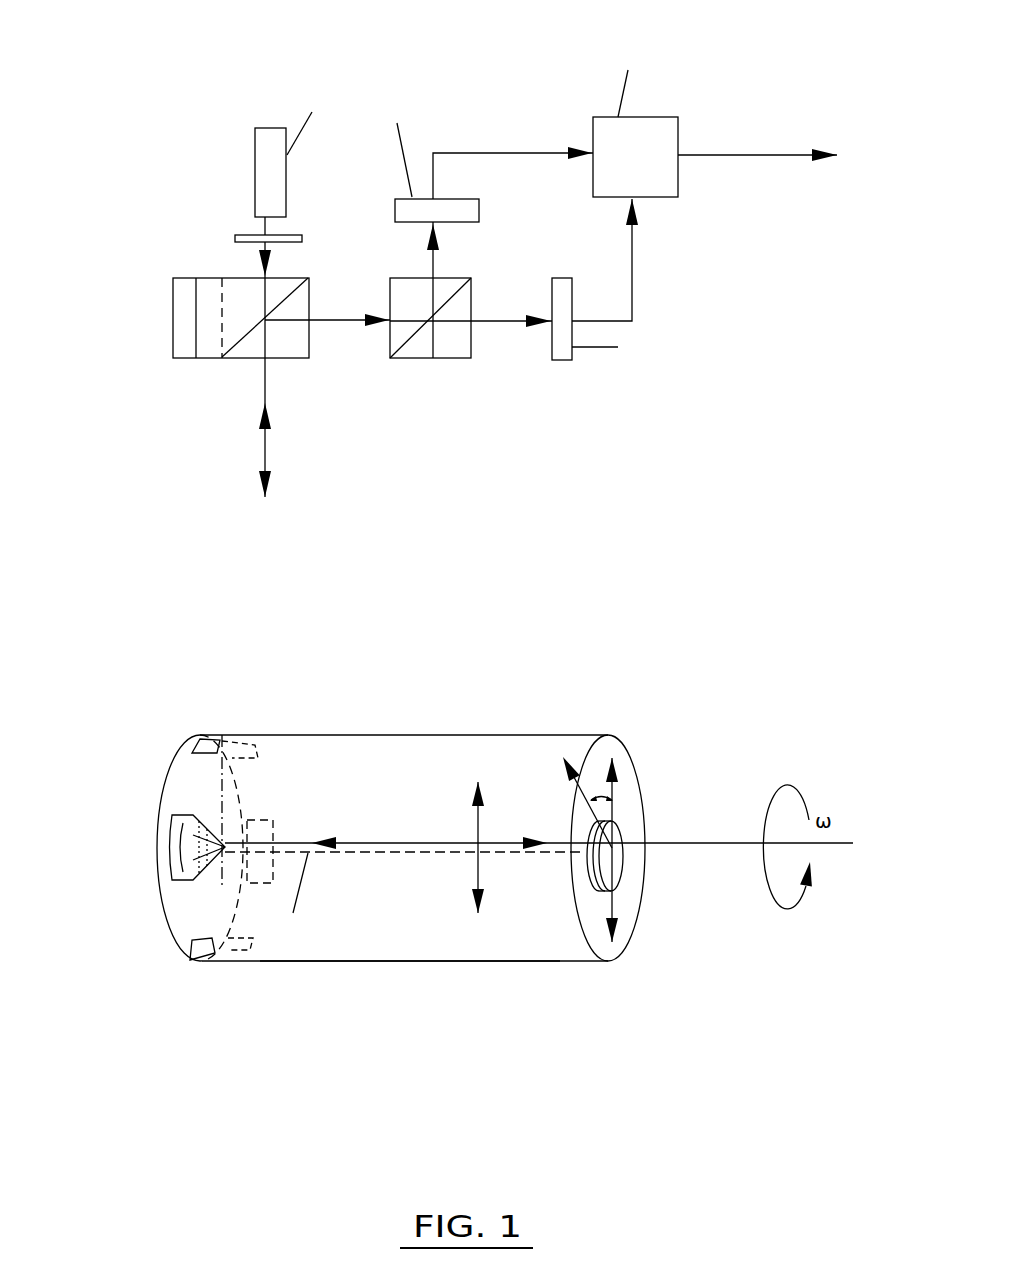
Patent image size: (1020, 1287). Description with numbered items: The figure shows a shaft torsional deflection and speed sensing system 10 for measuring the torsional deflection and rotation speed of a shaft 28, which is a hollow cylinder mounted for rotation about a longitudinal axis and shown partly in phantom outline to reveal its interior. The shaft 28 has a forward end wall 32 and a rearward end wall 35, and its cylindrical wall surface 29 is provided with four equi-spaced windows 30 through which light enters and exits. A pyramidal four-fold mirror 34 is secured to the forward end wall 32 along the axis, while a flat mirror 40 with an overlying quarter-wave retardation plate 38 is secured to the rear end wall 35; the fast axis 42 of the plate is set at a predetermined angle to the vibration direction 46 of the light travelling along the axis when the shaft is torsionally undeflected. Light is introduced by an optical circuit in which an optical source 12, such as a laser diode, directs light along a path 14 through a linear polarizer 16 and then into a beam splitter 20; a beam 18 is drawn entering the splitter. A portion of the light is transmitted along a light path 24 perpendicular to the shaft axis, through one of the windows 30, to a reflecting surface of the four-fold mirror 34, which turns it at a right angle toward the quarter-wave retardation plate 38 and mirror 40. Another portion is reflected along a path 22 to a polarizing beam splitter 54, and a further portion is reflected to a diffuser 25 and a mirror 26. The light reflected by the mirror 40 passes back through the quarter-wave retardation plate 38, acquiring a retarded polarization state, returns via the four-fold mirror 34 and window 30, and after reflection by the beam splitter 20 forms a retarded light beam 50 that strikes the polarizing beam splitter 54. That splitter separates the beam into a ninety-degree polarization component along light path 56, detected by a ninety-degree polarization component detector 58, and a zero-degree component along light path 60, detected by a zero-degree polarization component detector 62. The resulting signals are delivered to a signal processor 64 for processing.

The shaft torsional deflection and speed sensing system 10 is at (562, 84).
The optical source 12 is at (263, 173).
The path 14 is at (265, 223).
The linear polarizer 16 is at (298, 233).
The input beam 18 is at (263, 257).
The beam splitter 20 is at (222, 357).
The path 22 is at (333, 320).
The light path 24 is at (270, 485).
The diffuser 25 is at (208, 295).
The mirror 26 is at (183, 328).
The shaft 28 is at (412, 950).
The cylindrical wall surface 29 is at (305, 963).
The windows 30 is at (220, 742).
The end wall 32 is at (190, 765).
The four-fold mirror 34 is at (222, 832).
The end wall 35 is at (602, 950).
The quarter-wave retardation plate 38 is at (592, 877).
The mirror 40 is at (623, 877).
The fast axis 42 is at (578, 760).
The vibration direction 46 is at (478, 817).
The retarded light beam 50 is at (270, 420).
The polarizing beam splitter 54 is at (447, 360).
The light path 56 is at (433, 260).
The 90° polarization component detector 58 is at (479, 208).
The light path 60 is at (492, 322).
The 0° polarization component detector 62 is at (572, 360).
The signal processor 64 is at (719, 122).